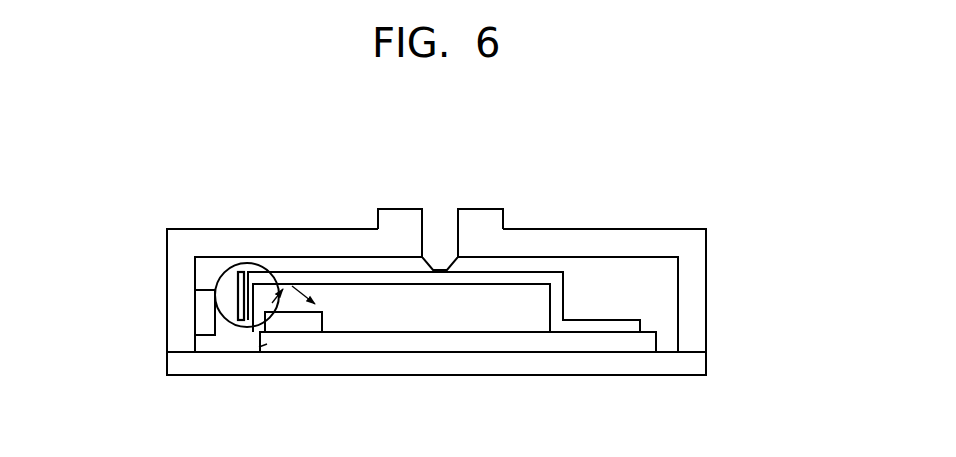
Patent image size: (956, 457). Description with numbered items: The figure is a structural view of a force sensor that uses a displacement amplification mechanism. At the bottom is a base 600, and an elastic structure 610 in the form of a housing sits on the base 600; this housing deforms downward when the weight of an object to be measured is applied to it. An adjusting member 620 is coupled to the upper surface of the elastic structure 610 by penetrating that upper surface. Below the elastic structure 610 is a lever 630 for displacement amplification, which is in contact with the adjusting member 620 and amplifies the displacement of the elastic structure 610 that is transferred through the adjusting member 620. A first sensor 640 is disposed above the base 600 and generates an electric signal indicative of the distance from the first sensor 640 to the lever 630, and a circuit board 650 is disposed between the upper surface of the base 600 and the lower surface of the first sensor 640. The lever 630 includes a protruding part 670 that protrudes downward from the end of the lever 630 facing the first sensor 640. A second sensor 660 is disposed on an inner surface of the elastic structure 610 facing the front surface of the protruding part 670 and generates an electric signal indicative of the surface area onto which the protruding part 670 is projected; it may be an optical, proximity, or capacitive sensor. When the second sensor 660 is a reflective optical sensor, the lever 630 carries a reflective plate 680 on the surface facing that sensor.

The base 600 is at (680, 367).
The elastic structure 610 is at (592, 243).
The adjusting member 620 is at (430, 232).
The lever 630 is at (498, 278).
The first sensor 640 is at (292, 320).
The circuit board 650 is at (263, 345).
The second sensor 660 is at (205, 318).
The protruding part 670 is at (248, 273).
The reflective plate 680 is at (282, 292).